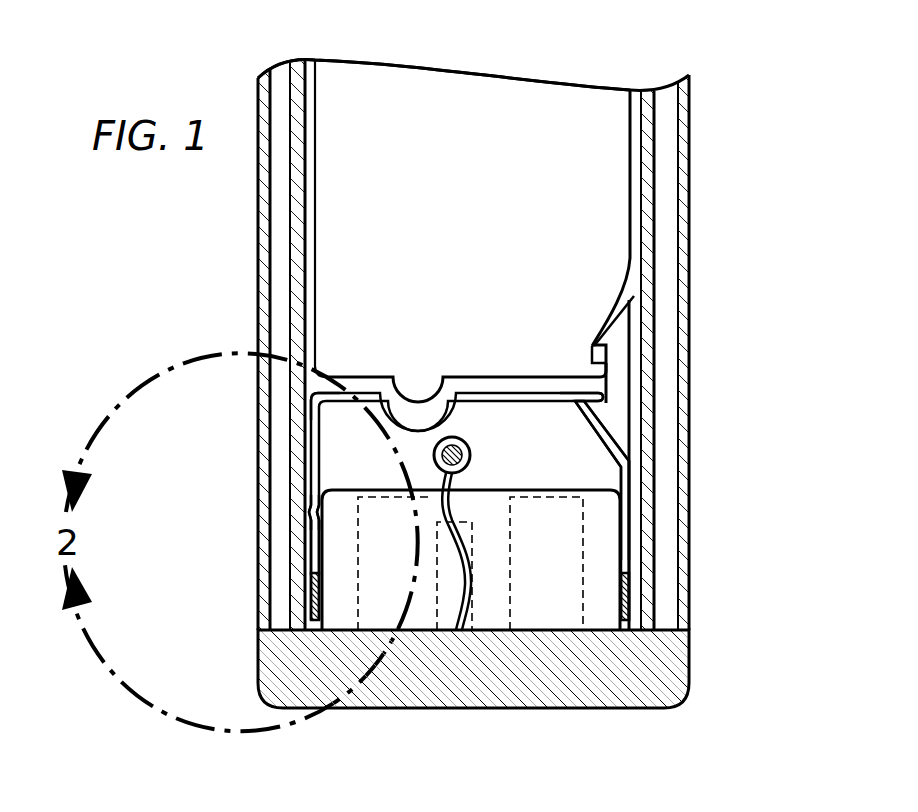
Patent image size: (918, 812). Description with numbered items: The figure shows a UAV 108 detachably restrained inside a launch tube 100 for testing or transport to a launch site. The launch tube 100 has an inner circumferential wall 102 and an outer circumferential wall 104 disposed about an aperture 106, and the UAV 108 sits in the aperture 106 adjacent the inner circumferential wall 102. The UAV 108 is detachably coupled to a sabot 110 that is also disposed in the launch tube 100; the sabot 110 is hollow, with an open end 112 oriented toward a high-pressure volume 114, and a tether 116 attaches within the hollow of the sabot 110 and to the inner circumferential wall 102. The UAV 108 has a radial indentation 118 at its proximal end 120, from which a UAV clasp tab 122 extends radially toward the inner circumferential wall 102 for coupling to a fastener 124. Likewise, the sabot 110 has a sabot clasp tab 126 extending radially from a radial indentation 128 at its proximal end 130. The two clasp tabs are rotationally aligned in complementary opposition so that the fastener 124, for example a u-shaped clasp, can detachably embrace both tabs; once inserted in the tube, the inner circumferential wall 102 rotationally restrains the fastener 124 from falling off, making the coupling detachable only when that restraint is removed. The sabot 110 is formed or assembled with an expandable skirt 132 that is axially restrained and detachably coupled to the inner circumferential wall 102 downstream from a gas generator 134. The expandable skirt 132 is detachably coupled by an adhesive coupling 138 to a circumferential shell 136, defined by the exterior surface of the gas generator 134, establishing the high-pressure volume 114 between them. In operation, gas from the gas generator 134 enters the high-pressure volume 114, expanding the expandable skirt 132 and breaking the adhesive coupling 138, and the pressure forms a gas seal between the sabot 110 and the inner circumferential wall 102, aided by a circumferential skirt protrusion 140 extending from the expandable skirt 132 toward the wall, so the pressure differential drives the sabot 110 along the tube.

The launch tube 100 is at (691, 192).
The inner circumferential wall 102 is at (648, 90).
The outer circumferential wall 104 is at (693, 97).
The aperture 106 is at (310, 60).
The UAV 108 is at (332, 283).
The sabot 110 is at (469, 509).
The open end 112 is at (597, 620).
The high-pressure volume 114 is at (546, 468).
The tether 116 is at (467, 610).
The radial indentation 118 is at (617, 290).
The proximal end 120 is at (297, 350).
The UAV clasp tab 122 is at (595, 366).
The fastener 124 is at (618, 373).
The sabot clasp tab 126 is at (615, 400).
The radial indentation 128 is at (626, 452).
The proximal end 130 is at (312, 408).
The expandable skirt 132 is at (632, 603).
The gas generator 134 is at (604, 547).
The circumferential shell 136 is at (318, 526).
The adhesive coupling 138 is at (318, 580).
The circumferential skirt protrusion 140 is at (307, 510).